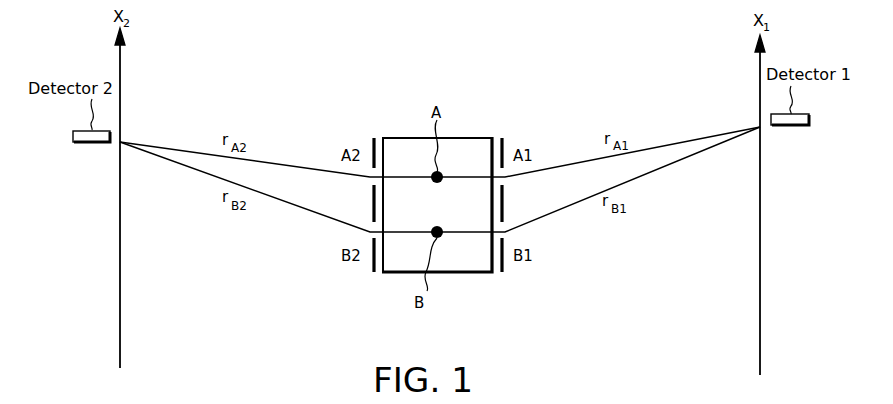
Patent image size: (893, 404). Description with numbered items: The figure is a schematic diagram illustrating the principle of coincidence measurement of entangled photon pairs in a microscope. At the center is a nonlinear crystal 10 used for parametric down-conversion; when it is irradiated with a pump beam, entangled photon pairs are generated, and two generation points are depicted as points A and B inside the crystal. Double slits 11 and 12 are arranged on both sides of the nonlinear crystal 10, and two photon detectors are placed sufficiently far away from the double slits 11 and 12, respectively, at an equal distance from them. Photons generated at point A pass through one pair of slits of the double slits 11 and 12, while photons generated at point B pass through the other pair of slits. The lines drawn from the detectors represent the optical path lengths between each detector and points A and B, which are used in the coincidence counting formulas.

The nonlinear crystal 10 is at (462, 273).
The double slit 11 is at (503, 273).
The double slit 12 is at (374, 273).